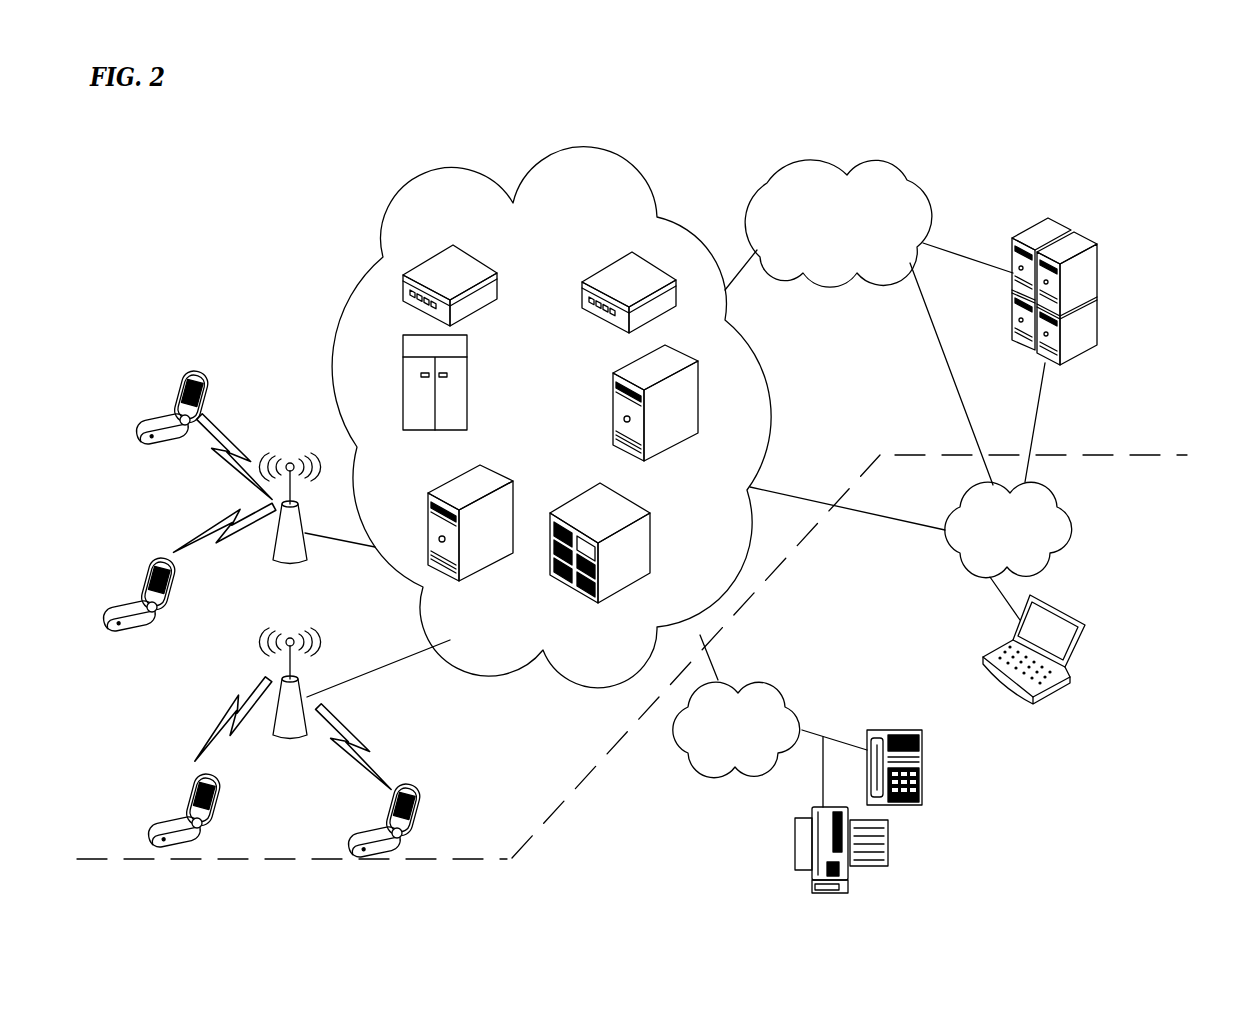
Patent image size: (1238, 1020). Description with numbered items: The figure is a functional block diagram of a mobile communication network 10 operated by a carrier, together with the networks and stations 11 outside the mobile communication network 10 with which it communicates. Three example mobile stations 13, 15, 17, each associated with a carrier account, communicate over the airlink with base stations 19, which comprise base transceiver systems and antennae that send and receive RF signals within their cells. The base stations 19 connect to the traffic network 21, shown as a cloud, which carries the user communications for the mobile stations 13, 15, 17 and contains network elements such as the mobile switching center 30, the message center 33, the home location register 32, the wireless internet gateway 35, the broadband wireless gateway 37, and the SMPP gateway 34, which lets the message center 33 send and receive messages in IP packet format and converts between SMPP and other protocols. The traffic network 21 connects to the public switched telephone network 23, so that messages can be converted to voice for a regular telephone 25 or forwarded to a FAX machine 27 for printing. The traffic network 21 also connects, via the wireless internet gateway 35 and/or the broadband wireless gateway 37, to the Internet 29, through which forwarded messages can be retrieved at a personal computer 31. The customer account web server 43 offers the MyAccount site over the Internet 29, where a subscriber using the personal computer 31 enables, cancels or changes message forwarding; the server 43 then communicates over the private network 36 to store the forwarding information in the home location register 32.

The mobile communication network 10 is at (380, 205).
The networks and stations outside the mobile communication network 11 is at (632, 657).
The mobile station 13 is at (170, 390).
The mobile station 15 is at (163, 817).
The mobile station 17 is at (412, 790).
The base station 19 is at (297, 502).
The traffic network 21 is at (573, 163).
The public switched telephone network 23 is at (697, 763).
The telephone 25 is at (922, 750).
The FAX machine 27 is at (795, 847).
The Internet 29 is at (1073, 528).
The mobile switching center 30 is at (472, 523).
The personal computer 31 is at (1060, 610).
The home location register 32 is at (627, 560).
The message center 33 is at (403, 373).
The SMPP gateway 34 is at (632, 282).
The wireless internet gateway 35 is at (653, 403).
The private network 36 is at (900, 170).
The broadband wireless gateway 37 is at (452, 272).
The customer account web server 43 is at (1065, 237).